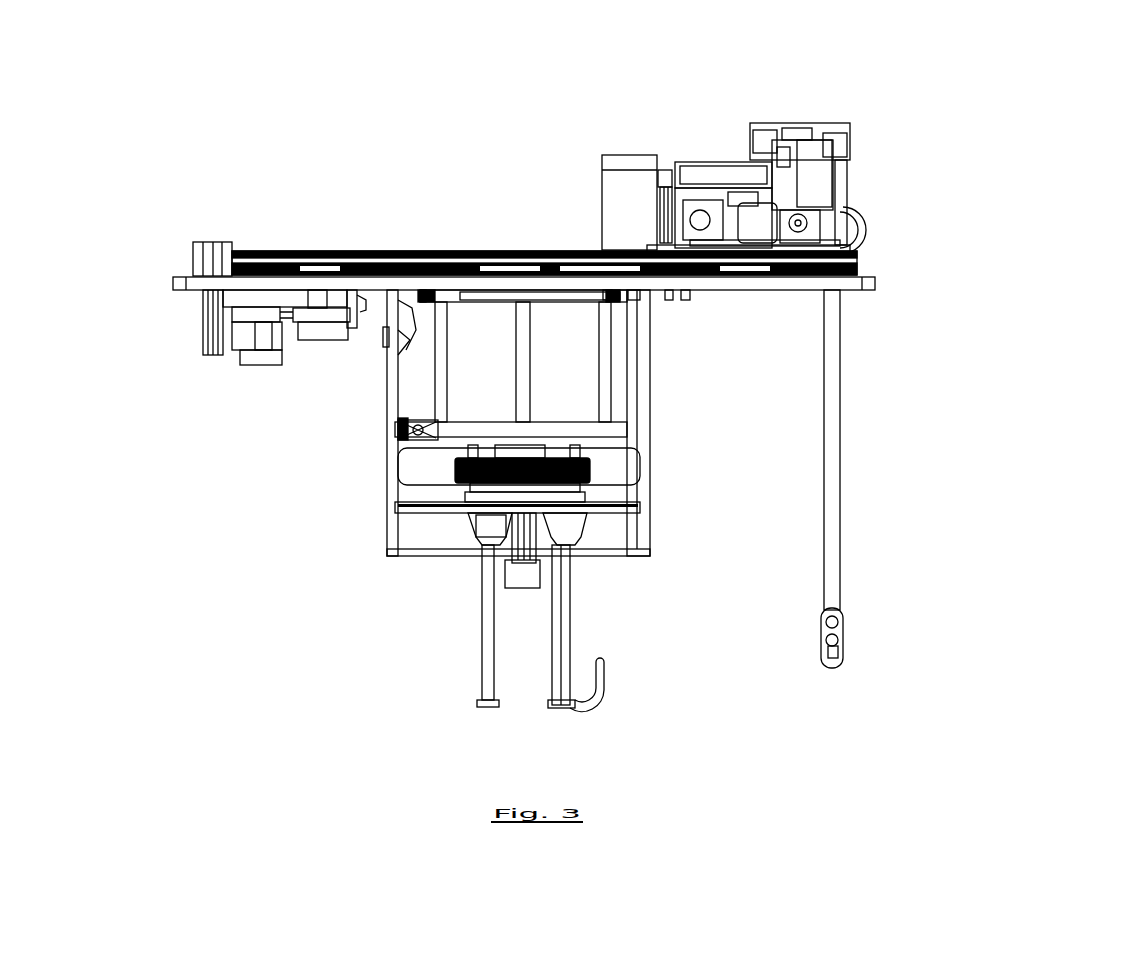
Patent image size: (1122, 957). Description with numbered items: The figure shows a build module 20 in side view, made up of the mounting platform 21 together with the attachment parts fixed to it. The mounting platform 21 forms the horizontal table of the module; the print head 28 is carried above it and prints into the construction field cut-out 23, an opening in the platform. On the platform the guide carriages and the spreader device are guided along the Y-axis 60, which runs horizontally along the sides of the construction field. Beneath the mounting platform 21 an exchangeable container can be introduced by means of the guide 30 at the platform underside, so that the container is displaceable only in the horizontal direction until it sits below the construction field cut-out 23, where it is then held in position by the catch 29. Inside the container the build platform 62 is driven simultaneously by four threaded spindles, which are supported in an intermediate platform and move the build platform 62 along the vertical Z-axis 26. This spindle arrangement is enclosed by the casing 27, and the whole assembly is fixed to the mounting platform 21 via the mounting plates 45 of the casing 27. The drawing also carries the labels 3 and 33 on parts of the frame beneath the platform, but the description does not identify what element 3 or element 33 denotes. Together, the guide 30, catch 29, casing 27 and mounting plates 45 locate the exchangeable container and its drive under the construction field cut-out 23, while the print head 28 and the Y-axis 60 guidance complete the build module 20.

The build module 20 is at (694, 88).
The construction field cut-out 23 is at (463, 240).
The print head 28 is at (620, 210).
The mounting platform 21 is at (210, 340).
The guide 30 is at (424, 302).
The casing 27 is at (427, 338).
The catch 29 is at (428, 432).
The Y-axis 60 is at (425, 513).
The housing frame 3 is at (650, 387).
The inner uprights 33 is at (562, 365).
The build platform 62 is at (585, 478).
The Z-axis 26 is at (567, 560).
The mounting plates 45 is at (776, 300).